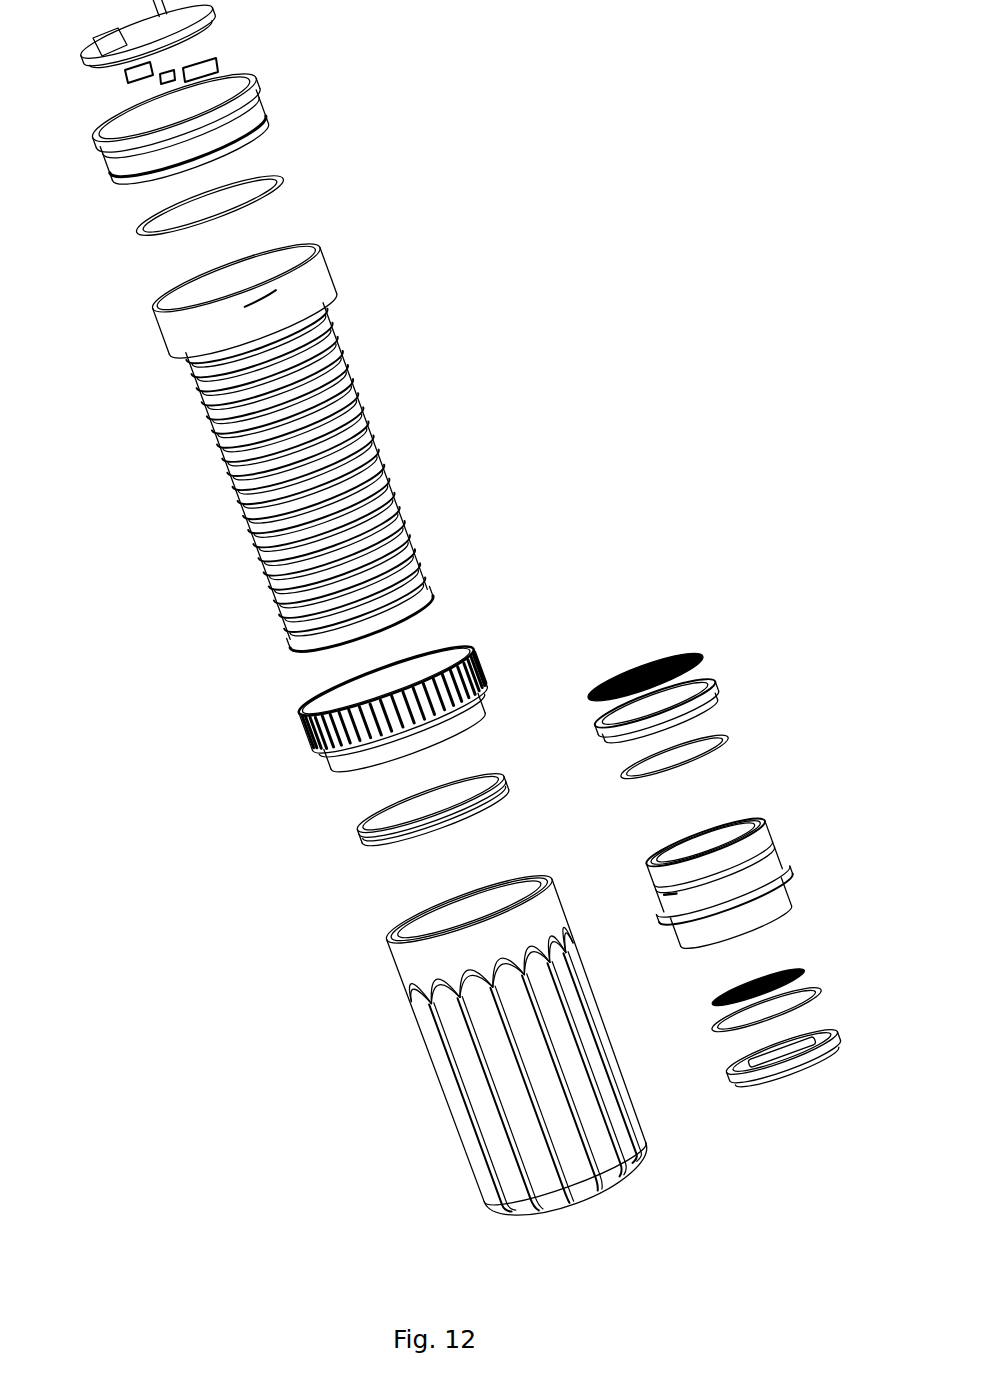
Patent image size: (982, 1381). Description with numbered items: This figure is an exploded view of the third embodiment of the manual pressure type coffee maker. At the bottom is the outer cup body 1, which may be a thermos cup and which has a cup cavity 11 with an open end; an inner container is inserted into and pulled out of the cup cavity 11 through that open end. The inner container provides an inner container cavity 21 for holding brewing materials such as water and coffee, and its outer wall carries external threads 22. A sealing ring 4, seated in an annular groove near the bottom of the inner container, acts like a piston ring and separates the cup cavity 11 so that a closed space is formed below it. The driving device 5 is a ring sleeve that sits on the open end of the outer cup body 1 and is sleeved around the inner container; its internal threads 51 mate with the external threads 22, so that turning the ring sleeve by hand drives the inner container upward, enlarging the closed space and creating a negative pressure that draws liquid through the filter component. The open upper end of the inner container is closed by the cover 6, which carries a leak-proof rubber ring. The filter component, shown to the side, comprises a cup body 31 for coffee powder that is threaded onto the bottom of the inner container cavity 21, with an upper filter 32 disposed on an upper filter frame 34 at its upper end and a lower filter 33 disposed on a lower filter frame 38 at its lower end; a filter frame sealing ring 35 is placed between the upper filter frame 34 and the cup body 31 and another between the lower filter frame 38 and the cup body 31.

The outer cup body 1 is at (426, 1044).
The cup cavity 11 is at (375, 905).
The inner container cavity 21 is at (189, 289).
The external threads 22 is at (309, 435).
The sealing ring 4 is at (347, 806).
The driving device 5 is at (374, 646).
The internal threads 51 is at (455, 632).
The cover 6 is at (228, 98).
The cup body 31 is at (741, 865).
The upper filter 32 is at (649, 624).
The lower filter 33 is at (785, 941).
The upper filter frame 34 is at (690, 661).
The filter frame sealing ring 35 is at (752, 845).
The lower filter frame 38 is at (809, 1030).